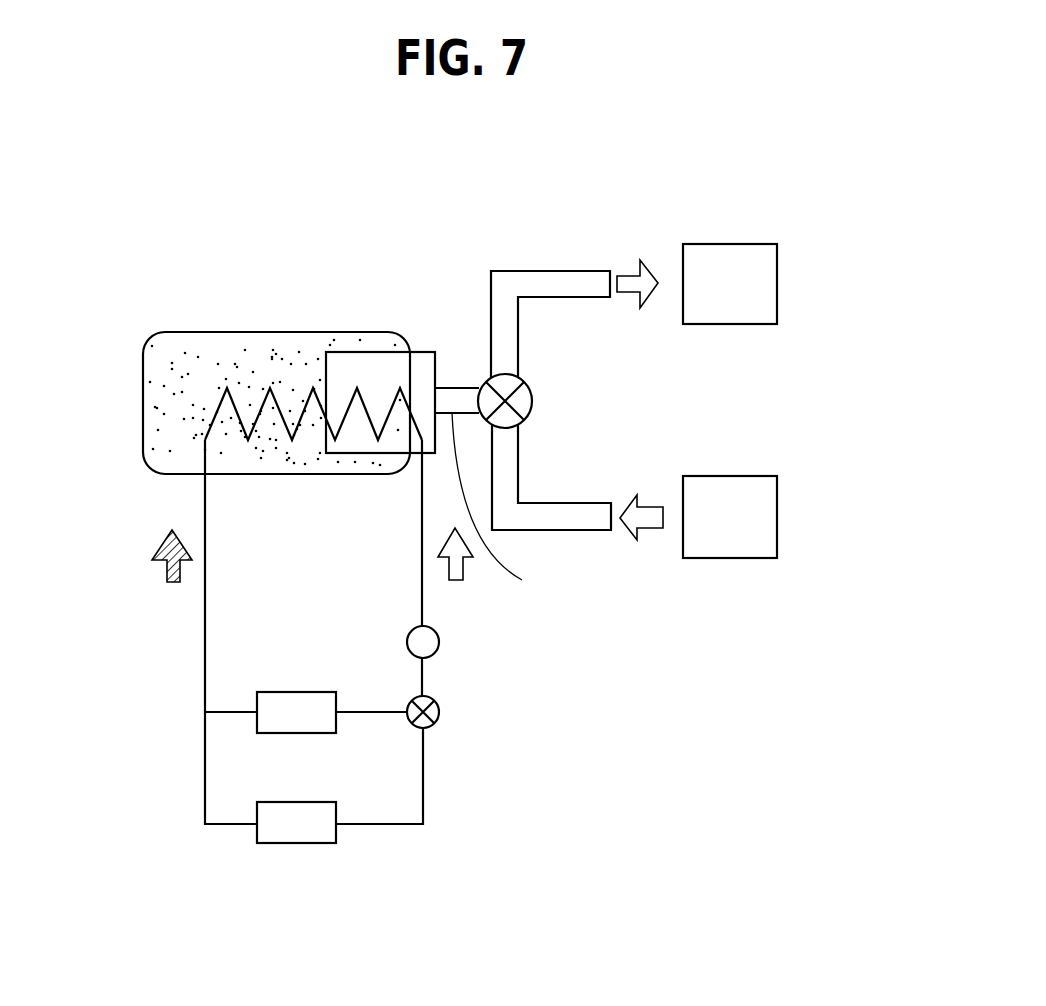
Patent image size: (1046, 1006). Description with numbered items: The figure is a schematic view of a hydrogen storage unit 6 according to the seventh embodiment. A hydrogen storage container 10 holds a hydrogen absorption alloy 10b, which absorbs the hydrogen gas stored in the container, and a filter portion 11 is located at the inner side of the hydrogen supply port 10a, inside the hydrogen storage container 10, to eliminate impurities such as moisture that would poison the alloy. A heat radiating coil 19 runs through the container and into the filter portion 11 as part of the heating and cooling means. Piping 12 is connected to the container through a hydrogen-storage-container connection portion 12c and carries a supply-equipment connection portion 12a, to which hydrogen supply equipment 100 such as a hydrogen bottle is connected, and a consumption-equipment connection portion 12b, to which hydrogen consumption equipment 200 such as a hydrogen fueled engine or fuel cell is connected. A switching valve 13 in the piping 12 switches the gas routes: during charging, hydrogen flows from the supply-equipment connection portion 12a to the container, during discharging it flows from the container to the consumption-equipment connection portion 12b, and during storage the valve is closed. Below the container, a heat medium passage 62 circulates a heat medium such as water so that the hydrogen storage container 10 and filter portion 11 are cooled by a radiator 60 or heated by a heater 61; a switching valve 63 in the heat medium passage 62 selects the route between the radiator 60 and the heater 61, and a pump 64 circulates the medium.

The hydrogen storage unit 6 is at (132, 381).
The hydrogen storage container 10 is at (176, 332).
The hydrogen supply port 10a is at (440, 388).
The hydrogen absorption alloy 10b is at (266, 360).
The filter portion 11 is at (346, 352).
The piping 12 is at (520, 271).
The supply-equipment connection portion 12a is at (592, 530).
The consumption-equipment connection portion 12b is at (592, 271).
The hydrogen-storage-container connection portion 12c is at (508, 513).
The switching valve 13 is at (535, 401).
The heat radiating coil 19 is at (230, 387).
The radiator 60 is at (285, 692).
The heater 61 is at (285, 802).
The heat medium passage 62 is at (206, 635).
The switching valve 63 is at (439, 712).
The pump 64 is at (439, 642).
The hydrogen supply equipment 100 is at (758, 558).
The hydrogen consumption equipment 200 is at (758, 324).